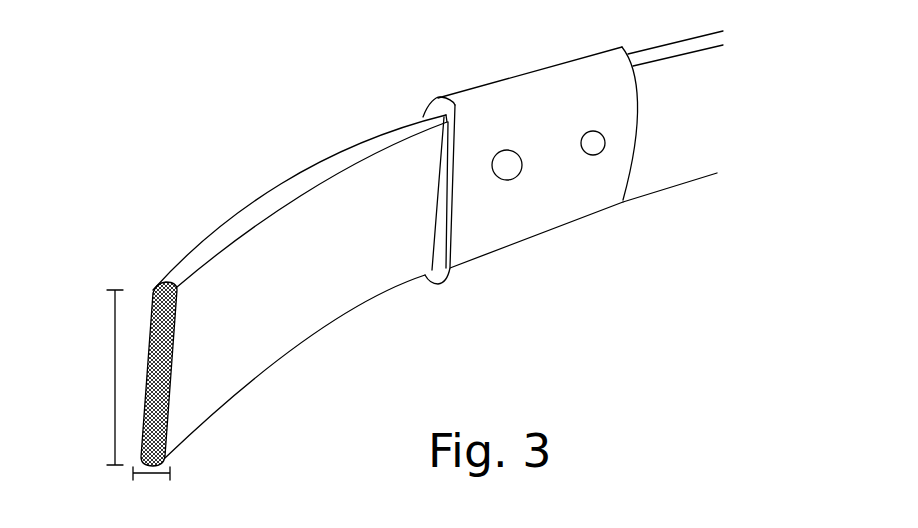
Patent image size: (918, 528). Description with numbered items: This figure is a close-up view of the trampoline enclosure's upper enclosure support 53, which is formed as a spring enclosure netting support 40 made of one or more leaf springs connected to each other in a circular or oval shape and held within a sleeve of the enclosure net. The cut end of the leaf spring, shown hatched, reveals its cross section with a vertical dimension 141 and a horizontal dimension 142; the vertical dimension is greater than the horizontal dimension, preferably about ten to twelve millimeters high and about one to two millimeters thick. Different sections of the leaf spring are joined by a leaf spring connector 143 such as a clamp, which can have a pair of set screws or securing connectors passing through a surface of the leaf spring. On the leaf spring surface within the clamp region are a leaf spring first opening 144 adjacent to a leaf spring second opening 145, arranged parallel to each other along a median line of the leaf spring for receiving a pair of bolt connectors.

The spring enclosure netting support 40 is at (151, 297).
The upper enclosure support 53 is at (332, 167).
The vertical dimension 141 is at (94, 377).
The horizontal dimension 142 is at (155, 484).
The leaf spring connector 143 is at (470, 247).
The leaf spring first opening 144 is at (507, 167).
The leaf spring second opening 145 is at (593, 145).